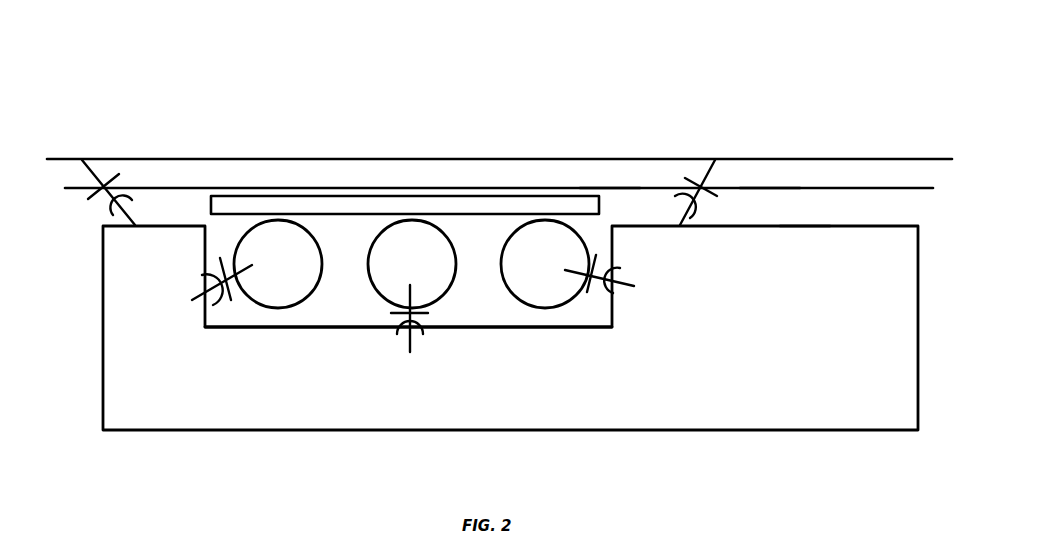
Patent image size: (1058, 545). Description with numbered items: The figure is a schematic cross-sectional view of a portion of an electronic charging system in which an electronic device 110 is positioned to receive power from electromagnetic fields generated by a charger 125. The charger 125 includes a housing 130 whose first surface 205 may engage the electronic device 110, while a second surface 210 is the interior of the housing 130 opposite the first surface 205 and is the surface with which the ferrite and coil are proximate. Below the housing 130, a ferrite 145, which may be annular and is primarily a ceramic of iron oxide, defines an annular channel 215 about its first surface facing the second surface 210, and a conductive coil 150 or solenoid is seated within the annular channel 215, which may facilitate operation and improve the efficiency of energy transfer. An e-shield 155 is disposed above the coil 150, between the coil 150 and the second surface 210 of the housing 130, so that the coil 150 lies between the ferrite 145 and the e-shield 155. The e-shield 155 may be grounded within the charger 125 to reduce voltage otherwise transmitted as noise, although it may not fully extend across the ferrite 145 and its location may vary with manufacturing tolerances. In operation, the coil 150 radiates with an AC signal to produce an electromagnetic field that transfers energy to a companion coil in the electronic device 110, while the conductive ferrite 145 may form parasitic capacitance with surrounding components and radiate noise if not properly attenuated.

The electronic device 110 is at (193, 159).
The housing 130 is at (873, 187).
The charger 125 is at (610, 188).
The first surface 205 is at (772, 187).
The second surface 210 is at (805, 190).
The ferrite 145 is at (357, 432).
The annular channel 215 is at (337, 328).
The e-shield 155 is at (447, 196).
The coil 150 is at (440, 298).